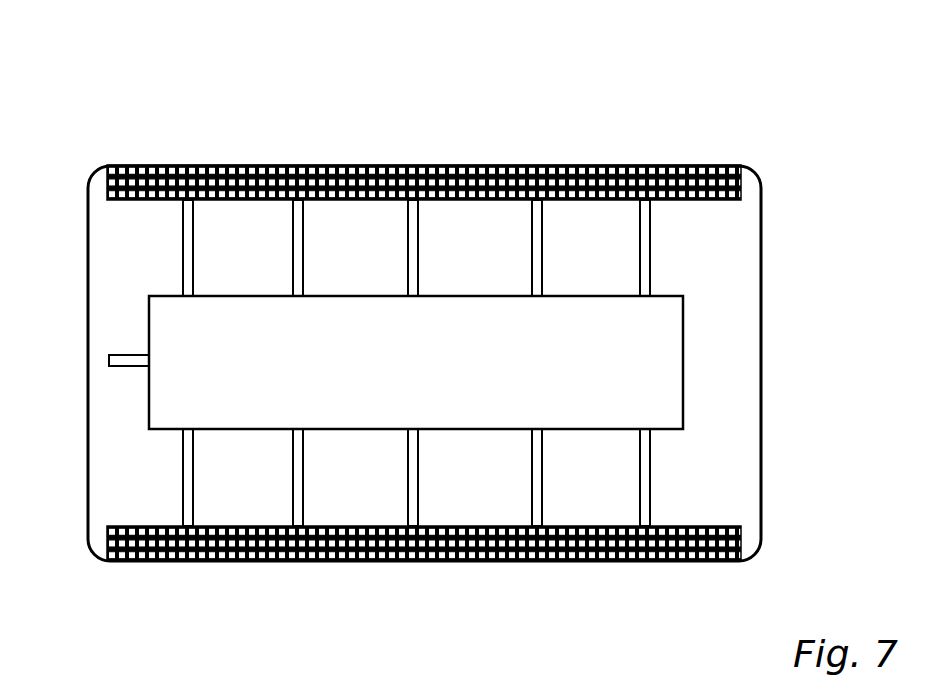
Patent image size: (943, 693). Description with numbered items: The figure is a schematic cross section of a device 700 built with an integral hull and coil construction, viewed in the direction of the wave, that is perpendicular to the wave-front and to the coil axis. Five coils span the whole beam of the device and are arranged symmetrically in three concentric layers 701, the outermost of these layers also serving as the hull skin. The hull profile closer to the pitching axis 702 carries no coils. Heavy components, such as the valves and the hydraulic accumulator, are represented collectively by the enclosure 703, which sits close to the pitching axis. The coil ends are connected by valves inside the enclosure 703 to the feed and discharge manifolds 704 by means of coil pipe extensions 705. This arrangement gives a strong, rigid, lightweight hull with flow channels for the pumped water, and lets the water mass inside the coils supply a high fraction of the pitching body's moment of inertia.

The device 700 is at (587, 108).
The concentric layers 701 is at (285, 165).
The hull profile closer to the pitching axis 702 is at (768, 265).
The enclosure 703 is at (693, 388).
The feed and discharge manifolds 704 is at (113, 372).
The coil pipe extensions 705 is at (287, 479).